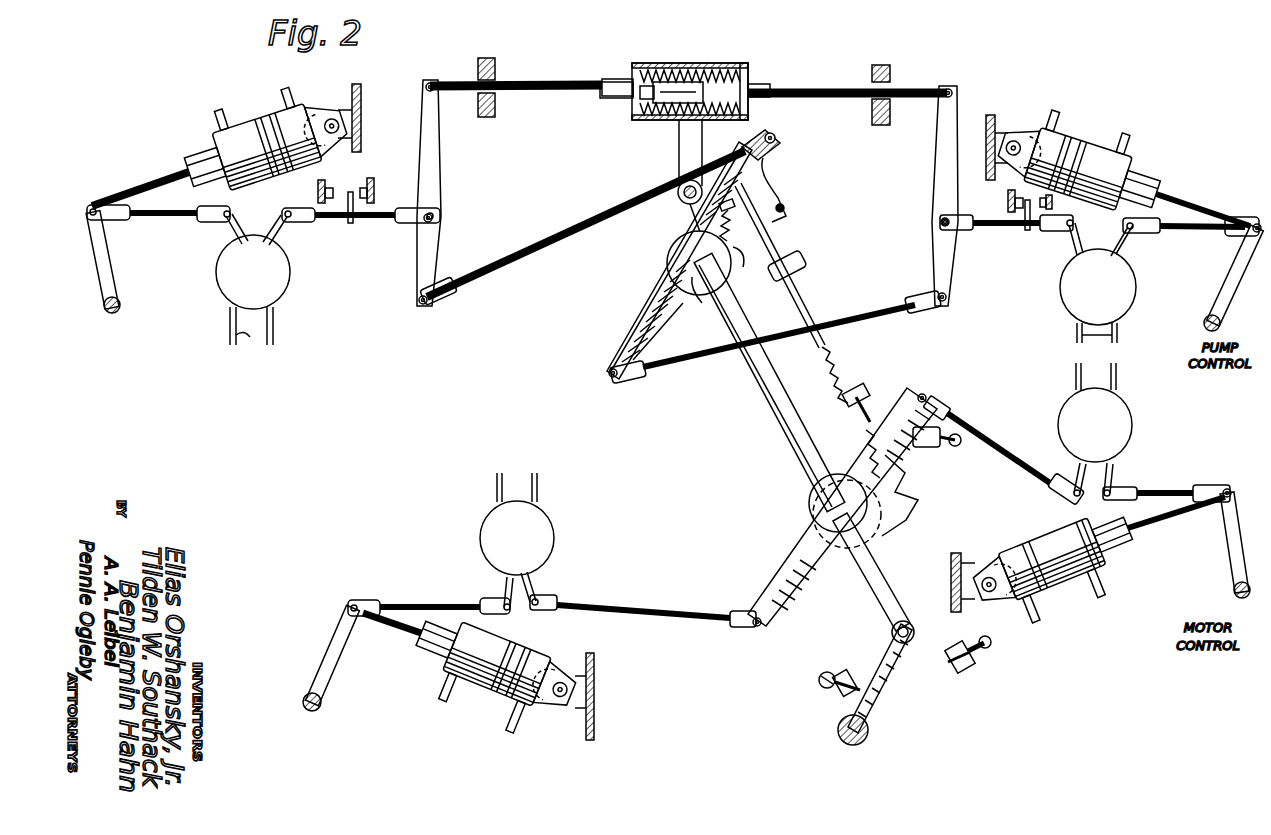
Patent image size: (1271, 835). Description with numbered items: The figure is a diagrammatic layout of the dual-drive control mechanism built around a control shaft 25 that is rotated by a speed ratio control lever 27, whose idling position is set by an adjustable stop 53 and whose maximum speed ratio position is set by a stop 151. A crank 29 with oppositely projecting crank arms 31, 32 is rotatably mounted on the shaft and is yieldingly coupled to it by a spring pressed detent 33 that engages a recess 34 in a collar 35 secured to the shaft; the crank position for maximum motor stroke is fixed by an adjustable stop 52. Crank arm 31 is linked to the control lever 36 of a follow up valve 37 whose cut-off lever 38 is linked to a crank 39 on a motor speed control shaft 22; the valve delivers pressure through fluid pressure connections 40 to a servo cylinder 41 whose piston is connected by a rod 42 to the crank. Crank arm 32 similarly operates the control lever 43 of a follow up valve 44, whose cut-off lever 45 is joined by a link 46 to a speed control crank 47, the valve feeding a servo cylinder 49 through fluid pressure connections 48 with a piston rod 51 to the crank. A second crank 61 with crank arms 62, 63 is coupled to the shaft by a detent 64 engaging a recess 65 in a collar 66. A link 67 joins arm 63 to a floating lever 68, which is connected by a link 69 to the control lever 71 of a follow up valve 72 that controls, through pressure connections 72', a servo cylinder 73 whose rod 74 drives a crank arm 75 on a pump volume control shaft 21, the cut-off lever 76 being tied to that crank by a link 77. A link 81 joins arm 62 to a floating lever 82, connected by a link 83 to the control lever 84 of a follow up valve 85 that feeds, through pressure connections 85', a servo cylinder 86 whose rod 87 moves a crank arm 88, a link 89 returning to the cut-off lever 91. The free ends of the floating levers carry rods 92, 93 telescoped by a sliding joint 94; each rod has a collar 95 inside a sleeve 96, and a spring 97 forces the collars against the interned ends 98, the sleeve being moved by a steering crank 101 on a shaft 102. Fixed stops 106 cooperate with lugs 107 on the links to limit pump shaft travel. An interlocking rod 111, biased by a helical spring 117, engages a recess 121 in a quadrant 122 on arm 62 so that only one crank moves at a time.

The volume control shaft 21 is at (114, 313).
The speed control shaft 22 is at (313, 711).
The control shaft 25 is at (764, 392).
The speed ratio control lever 27 is at (882, 690).
The crank 29 is at (882, 522).
The crank arm 31 is at (900, 452).
The crank arm 32 is at (780, 592).
The spring pressed detent 33 is at (862, 461).
The recess 34 is at (876, 553).
The collar 35 is at (810, 500).
The control lever 36 is at (1070, 463).
The follow up valve 37 is at (1115, 405).
The cut-off lever 38 is at (1112, 466).
The crank 39 is at (1233, 570).
The fluid pressure connections 40 is at (1075, 368).
The servo cylinder 41 is at (1068, 586).
The rod 42 is at (1165, 522).
The control lever 43 is at (546, 582).
The follow up valve 44 is at (555, 526).
The cut-off lever 45 is at (500, 579).
The link 46 is at (408, 600).
The speed control crank 47 is at (325, 643).
The fluid pressure connections 48 is at (500, 480).
The servo cylinder 49 is at (505, 644).
The piston rod 51 is at (391, 629).
The adjustable stop 52 is at (943, 445).
The adjustable stop 53 is at (845, 672).
The second crank 61 is at (667, 261).
The crank arm 62 is at (778, 147).
The crank arm 63 is at (626, 327).
The spring pressed detent 64 is at (747, 261).
The recess 65 is at (716, 232).
The collar 66 is at (706, 302).
The link 67 is at (886, 320).
The floating lever 68 is at (950, 295).
The link 69 is at (990, 230).
The control lever 71 is at (1071, 246).
The follow up valve 72 is at (1081, 287).
The pressure connections 72' is at (1098, 216).
The servo cylinder 73 is at (1091, 142).
The rod 74 is at (1200, 194).
The crank arm 75 is at (1210, 285).
The cut-off lever 76 is at (1124, 250).
The link 77 is at (1196, 233).
The link 81 is at (531, 252).
The floating lever 82 is at (441, 236).
The link 83 is at (382, 209).
The control lever 84 is at (283, 238).
The follow up valve 85 is at (253, 272).
The pressure connections 85' is at (248, 216).
The servo cylinder 86 is at (256, 118).
The rod 87 is at (150, 188).
The crank arm 88 is at (118, 268).
The link 89 is at (140, 219).
The cut-off lever 91 is at (226, 230).
The rod 92 is at (815, 87).
The rod 93 is at (531, 81).
The sliding joint 94 is at (655, 119).
The collar 95 is at (622, 100).
The sleeve 96 is at (668, 64).
The spring 97 is at (673, 119).
The interned ends 98 is at (751, 69).
The steering crank 101 is at (678, 168).
The shaft 102 is at (683, 201).
The fixed stops 106 is at (335, 190).
The lugs 107 is at (349, 224).
The interlocking rod 111 is at (798, 272).
The helical spring 117 is at (851, 370).
The recess 121 is at (787, 210).
The quadrant 122 is at (783, 187).
The stop 151 is at (958, 670).